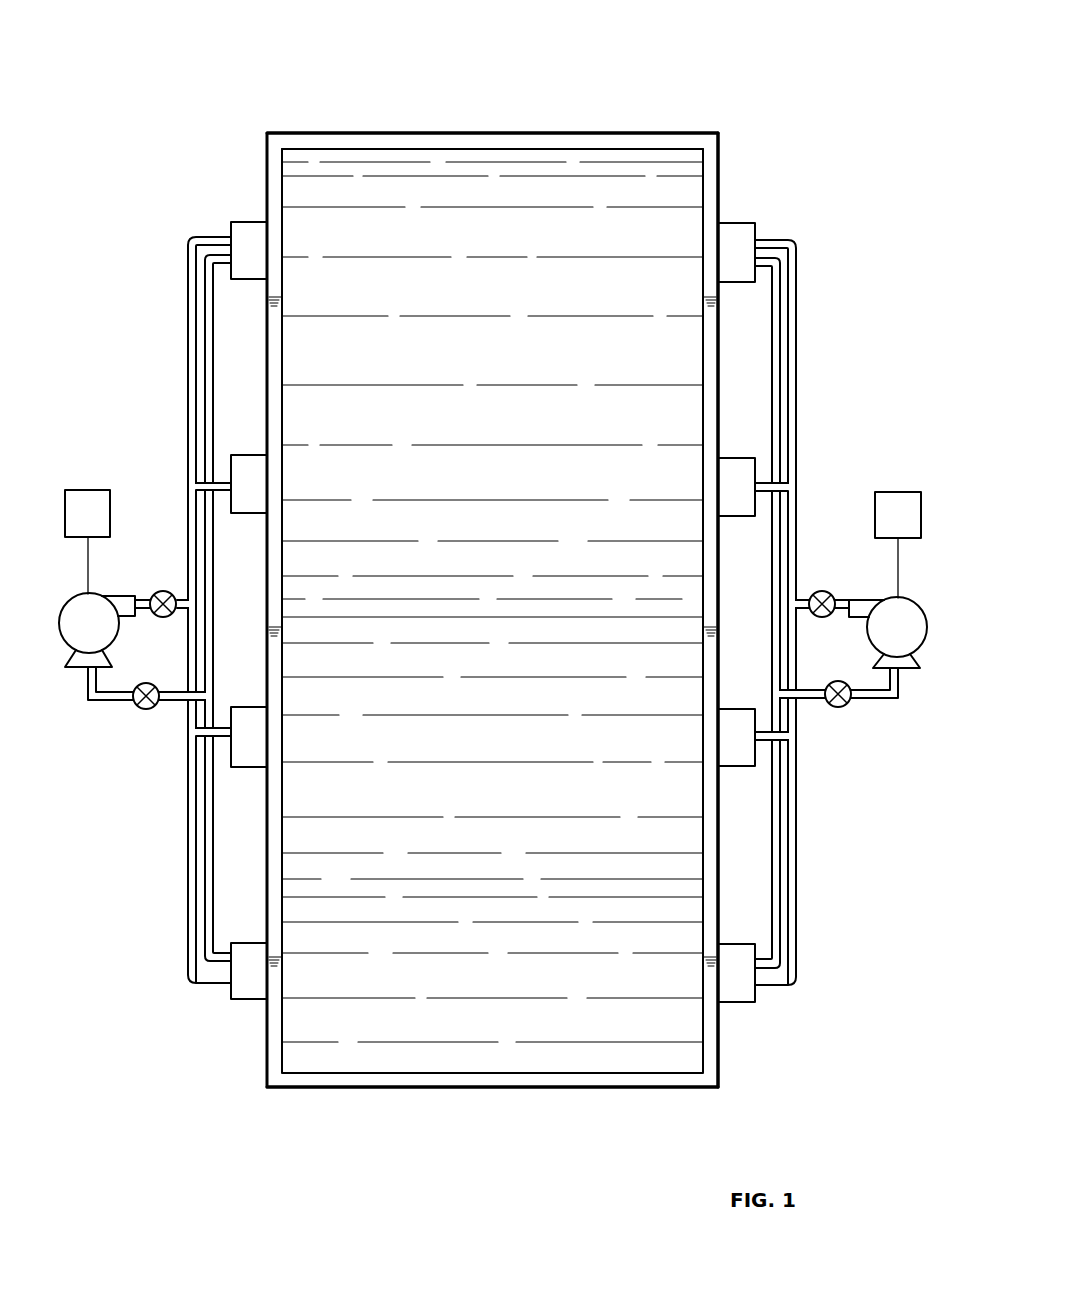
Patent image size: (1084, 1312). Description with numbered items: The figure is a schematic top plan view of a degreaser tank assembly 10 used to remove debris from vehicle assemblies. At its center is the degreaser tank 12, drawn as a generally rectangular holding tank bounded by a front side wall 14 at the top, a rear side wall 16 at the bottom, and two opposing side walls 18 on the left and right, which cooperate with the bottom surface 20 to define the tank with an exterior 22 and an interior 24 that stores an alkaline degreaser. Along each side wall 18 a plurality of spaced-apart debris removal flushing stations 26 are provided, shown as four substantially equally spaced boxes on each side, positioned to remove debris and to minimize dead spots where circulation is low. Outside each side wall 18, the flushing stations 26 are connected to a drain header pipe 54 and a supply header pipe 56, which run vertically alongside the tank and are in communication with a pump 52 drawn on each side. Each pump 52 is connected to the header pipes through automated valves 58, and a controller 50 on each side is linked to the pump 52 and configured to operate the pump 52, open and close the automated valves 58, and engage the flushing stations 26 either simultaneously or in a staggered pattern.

The degreaser tank assembly 10 is at (705, 105).
The degreaser tank 12 is at (344, 171).
The front side wall 14 is at (510, 133).
The rear side wall 16 is at (568, 1089).
The opposing side walls 18 is at (278, 352).
The bottom surface 20 is at (516, 532).
The exterior 22 is at (701, 171).
The interior 24 is at (719, 312).
The debris removal flushing station 26 is at (248, 228).
The controller 50 is at (92, 490).
The pump 52 is at (118, 633).
The drain header pipe 54 is at (188, 296).
The supply header pipe 56 is at (205, 387).
The automated valve 58 is at (165, 591).